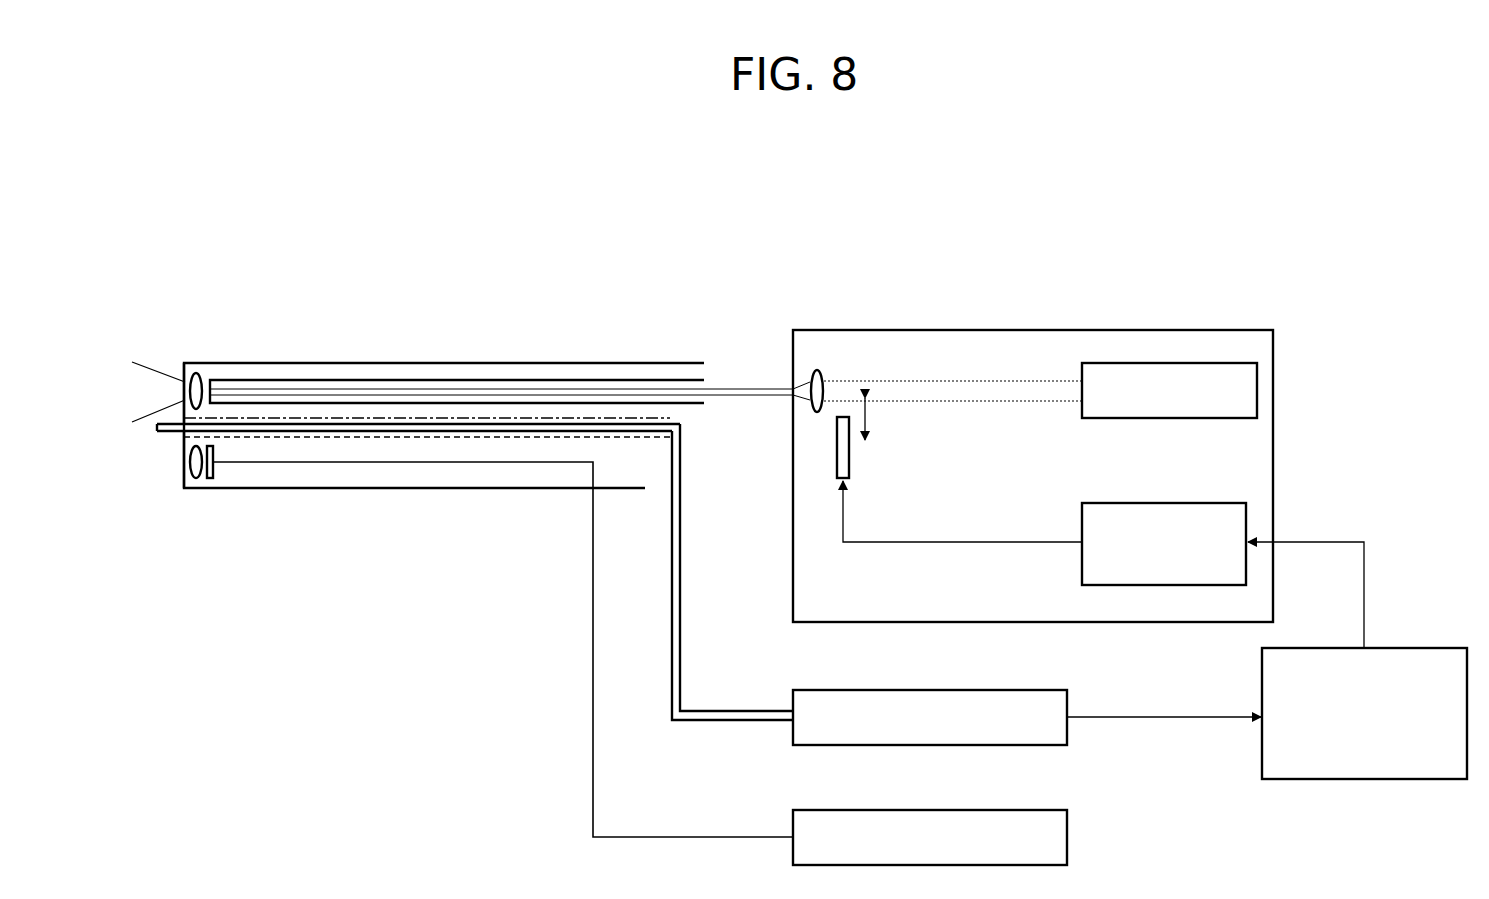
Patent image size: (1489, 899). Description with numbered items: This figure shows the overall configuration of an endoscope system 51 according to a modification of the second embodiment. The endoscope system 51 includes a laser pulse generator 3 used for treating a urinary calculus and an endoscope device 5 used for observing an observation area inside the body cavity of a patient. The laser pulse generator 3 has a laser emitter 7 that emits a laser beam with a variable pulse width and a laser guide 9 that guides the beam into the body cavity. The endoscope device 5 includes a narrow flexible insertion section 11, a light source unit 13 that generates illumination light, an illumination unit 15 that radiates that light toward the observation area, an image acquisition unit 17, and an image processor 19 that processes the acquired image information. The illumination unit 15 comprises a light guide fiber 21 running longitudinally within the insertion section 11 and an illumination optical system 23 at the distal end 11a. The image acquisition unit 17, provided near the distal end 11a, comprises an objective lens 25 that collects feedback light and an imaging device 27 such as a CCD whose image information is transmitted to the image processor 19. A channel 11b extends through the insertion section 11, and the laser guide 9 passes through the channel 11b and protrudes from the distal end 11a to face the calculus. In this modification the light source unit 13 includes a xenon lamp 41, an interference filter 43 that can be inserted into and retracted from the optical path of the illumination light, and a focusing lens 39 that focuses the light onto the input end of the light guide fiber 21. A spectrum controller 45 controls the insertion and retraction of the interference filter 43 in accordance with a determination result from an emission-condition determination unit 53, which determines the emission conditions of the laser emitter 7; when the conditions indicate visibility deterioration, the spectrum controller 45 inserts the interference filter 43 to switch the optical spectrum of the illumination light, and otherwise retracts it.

The endoscope system 51 is at (252, 150).
The laser pulse generator 3 is at (667, 728).
The endoscope device 5 is at (1293, 292).
The laser emitter 7 is at (1068, 733).
The laser guide 9 is at (681, 530).
The insertion section 11 is at (460, 362).
The distal end 11a is at (184, 452).
The channel 11b is at (375, 433).
The light source unit 13 is at (1007, 329).
The illumination unit 15 is at (350, 288).
The image acquisition unit 17 is at (153, 565).
The image processor 19 is at (1068, 837).
The light guide fiber 21 is at (325, 379).
The illumination optical system 23 is at (196, 372).
The objective lens 25 is at (191, 480).
The imaging device 27 is at (210, 480).
The focusing lens 39 is at (817, 369).
The xenon lamp 41 is at (1163, 362).
The interference filter 43 is at (835, 452).
The spectrum controller 45 is at (1163, 586).
The emission-condition determination unit 53 is at (1362, 780).